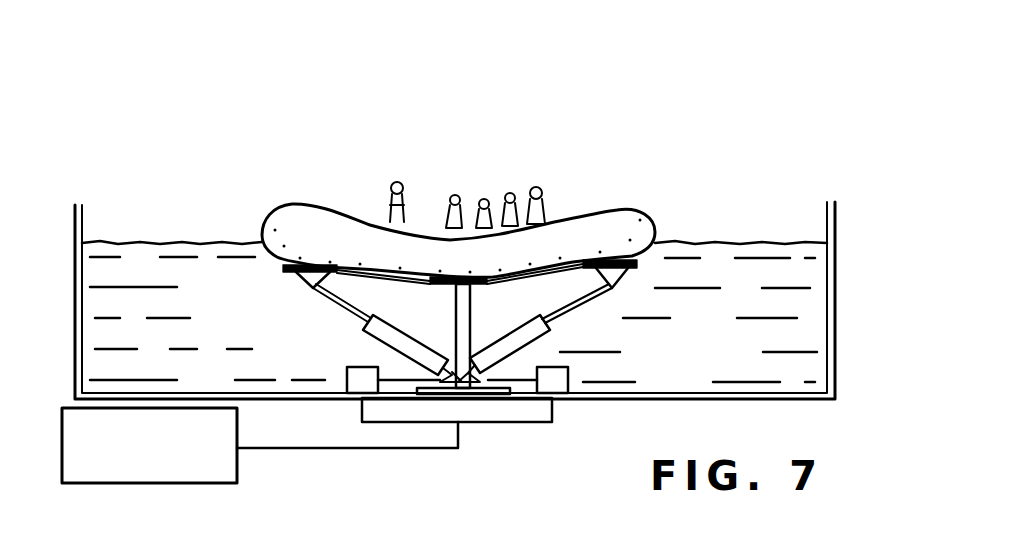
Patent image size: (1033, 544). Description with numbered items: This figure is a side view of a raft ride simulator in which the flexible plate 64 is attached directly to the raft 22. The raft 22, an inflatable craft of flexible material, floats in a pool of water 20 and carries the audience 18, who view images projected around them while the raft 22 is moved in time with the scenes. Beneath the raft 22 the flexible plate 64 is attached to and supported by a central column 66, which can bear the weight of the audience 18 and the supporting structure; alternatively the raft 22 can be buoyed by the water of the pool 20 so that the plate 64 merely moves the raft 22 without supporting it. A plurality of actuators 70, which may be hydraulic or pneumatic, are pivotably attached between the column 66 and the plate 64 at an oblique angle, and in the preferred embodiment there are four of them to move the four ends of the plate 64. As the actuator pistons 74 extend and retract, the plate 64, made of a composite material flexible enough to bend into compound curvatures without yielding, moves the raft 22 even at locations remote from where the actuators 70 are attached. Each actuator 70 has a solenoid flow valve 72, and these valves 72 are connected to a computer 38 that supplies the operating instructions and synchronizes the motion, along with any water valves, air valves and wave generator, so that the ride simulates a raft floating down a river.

The audience 18 is at (487, 167).
The pool of water 20 is at (733, 353).
The raft 22 is at (623, 212).
The computer 38 is at (190, 443).
The flexible plate 64 is at (527, 280).
The column 66 is at (470, 318).
The actuators 70 is at (408, 305).
The solenoid flow valve 72 is at (362, 368).
The actuator pistons 74 is at (307, 280).